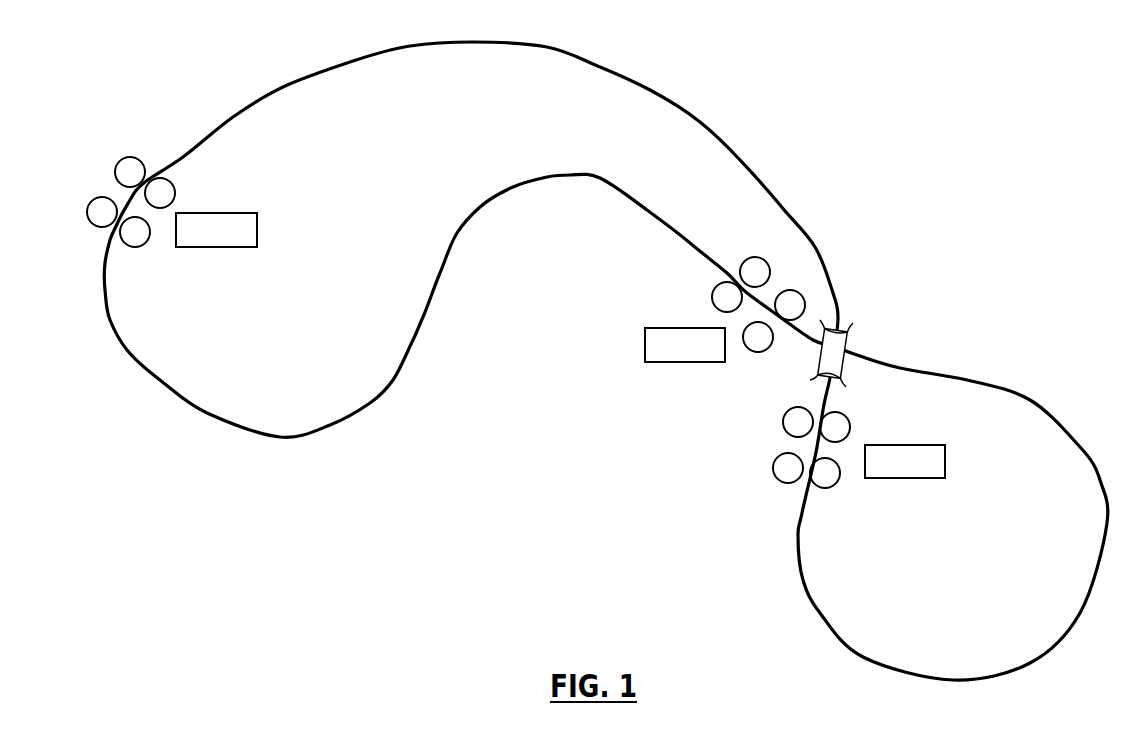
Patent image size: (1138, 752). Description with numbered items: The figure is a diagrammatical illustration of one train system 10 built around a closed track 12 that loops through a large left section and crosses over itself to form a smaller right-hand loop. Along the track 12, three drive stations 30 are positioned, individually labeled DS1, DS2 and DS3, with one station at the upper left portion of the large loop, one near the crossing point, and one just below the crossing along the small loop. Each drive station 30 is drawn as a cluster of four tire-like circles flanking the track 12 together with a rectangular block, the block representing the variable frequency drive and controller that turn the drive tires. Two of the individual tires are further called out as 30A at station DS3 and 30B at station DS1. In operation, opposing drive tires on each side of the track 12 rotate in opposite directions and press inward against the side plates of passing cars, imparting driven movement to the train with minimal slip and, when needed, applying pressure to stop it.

The train system 10 is at (606, 361).
The track 12 is at (1030, 400).
The drive station 30 is at (122, 147).
The roller of drive station DS3 30A is at (102, 233).
The roller of drive station DS1 30B is at (780, 282).
The drive station 1 DS1 is at (710, 295).
The drive station 2 DS2 is at (836, 447).
The drive station 3 DS3 is at (153, 202).